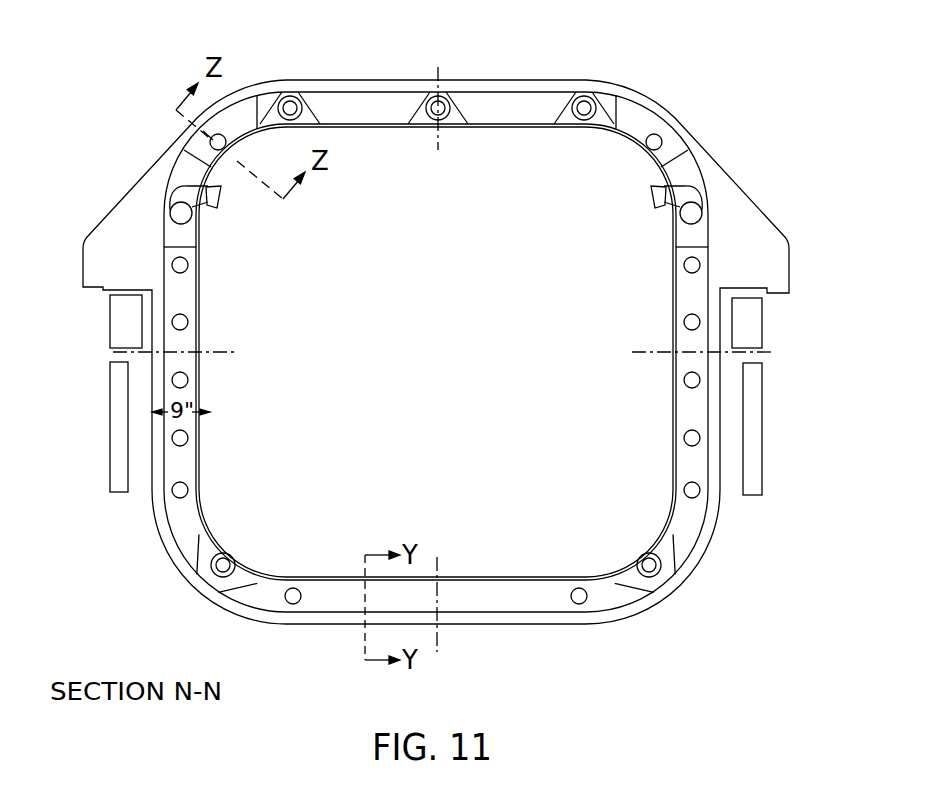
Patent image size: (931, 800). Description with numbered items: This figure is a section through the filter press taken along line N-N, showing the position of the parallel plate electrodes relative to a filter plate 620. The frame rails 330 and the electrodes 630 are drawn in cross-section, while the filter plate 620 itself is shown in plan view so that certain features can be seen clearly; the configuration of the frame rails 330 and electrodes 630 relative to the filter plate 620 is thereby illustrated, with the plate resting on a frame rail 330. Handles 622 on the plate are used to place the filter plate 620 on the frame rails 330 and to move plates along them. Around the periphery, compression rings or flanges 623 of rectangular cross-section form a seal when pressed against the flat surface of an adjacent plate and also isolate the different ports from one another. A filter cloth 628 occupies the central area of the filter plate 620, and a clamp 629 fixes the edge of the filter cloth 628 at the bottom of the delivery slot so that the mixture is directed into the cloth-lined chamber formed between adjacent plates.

The filter plate 620 is at (136, 126).
The handles 622 is at (745, 212).
The compression rings/flanges 623 is at (455, 127).
The filter cloth 628 is at (285, 547).
The clamp 629 is at (678, 188).
The electrodes 630 is at (115, 468).
The frame rails 330 is at (752, 325).